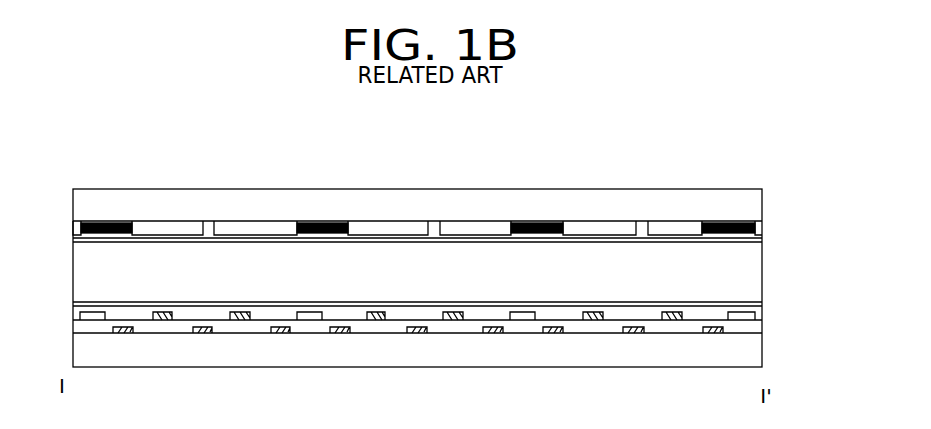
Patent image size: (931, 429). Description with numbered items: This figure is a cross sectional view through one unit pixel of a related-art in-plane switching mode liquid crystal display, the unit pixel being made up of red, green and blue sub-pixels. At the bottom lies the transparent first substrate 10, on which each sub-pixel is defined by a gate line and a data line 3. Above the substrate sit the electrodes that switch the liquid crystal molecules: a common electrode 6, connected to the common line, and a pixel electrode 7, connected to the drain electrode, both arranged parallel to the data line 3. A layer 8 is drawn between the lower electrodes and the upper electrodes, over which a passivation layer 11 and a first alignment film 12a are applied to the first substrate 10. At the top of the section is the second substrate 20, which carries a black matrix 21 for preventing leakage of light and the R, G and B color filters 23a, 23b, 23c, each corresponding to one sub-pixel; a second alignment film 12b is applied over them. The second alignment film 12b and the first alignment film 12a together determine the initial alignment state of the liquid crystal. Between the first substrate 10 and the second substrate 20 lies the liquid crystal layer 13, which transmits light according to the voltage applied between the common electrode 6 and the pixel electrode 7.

The second substrate 20 is at (757, 206).
The black matrix 21 is at (118, 228).
The R color filter 23a is at (175, 228).
The G color filter 23b is at (466, 228).
The B color filter 23c is at (672, 226).
The second alignment film 12b is at (757, 239).
The liquid crystal layer 13 is at (757, 265).
The first alignment film 12a is at (757, 302).
The passivation layer 11 is at (757, 312).
The data line 3 is at (92, 320).
The pixel electrode 7 is at (162, 320).
The gate insulating layer 8 is at (757, 328).
The common electrode 6 is at (283, 395).
The first substrate 10 is at (757, 353).